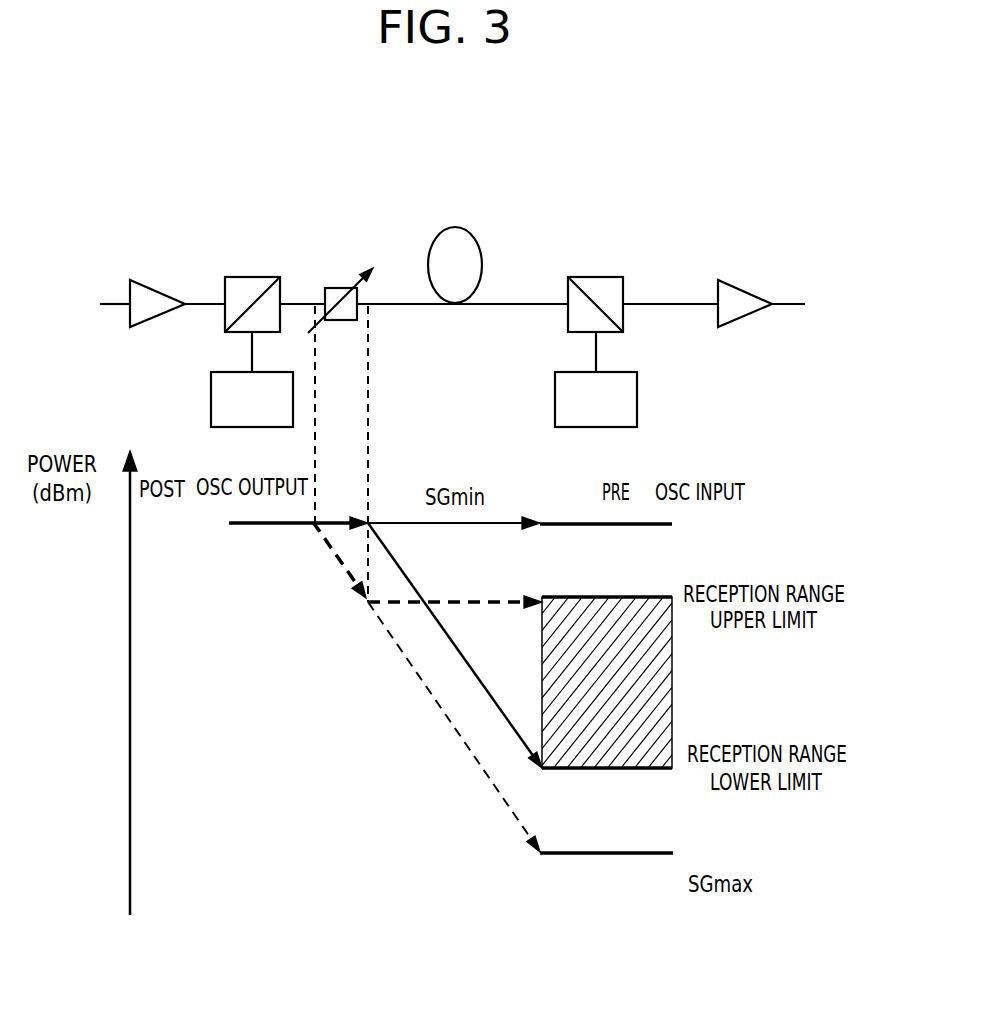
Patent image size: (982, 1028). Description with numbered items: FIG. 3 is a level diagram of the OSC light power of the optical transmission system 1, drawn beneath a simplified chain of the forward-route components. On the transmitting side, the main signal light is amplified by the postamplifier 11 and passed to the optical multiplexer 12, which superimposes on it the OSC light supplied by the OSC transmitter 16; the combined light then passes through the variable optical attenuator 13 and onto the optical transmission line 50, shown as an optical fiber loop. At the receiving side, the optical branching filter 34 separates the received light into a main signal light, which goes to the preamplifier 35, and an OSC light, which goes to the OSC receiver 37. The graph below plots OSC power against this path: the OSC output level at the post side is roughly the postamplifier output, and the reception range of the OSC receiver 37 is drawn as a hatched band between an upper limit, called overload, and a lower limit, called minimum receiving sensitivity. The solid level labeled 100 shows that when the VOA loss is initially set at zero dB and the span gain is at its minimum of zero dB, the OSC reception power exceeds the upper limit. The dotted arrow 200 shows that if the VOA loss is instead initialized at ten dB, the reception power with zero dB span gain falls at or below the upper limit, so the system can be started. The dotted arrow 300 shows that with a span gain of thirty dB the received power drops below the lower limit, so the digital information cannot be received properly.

The optical transmission system 1 is at (412, 105).
The optical amplifier (postamplifier) 11 is at (148, 328).
The optical multiplexer (coupler) 12 is at (252, 277).
The variable optical attenuator (VOA) 13 is at (350, 288).
The OSC transmitter 16 is at (211, 413).
The optical transmission line 50 is at (455, 228).
The optical branching filter (coupler) 34 is at (600, 277).
The optical amplifier (preamplifier) 35 is at (765, 311).
The OSC receiver 37 is at (637, 412).
The OSC light reception power at SGmin 100 is at (558, 522).
The dotted arrow (VOA loss set at ten dB) 200 is at (330, 547).
The dotted arrow (SG of thirty dB) 300 is at (438, 703).